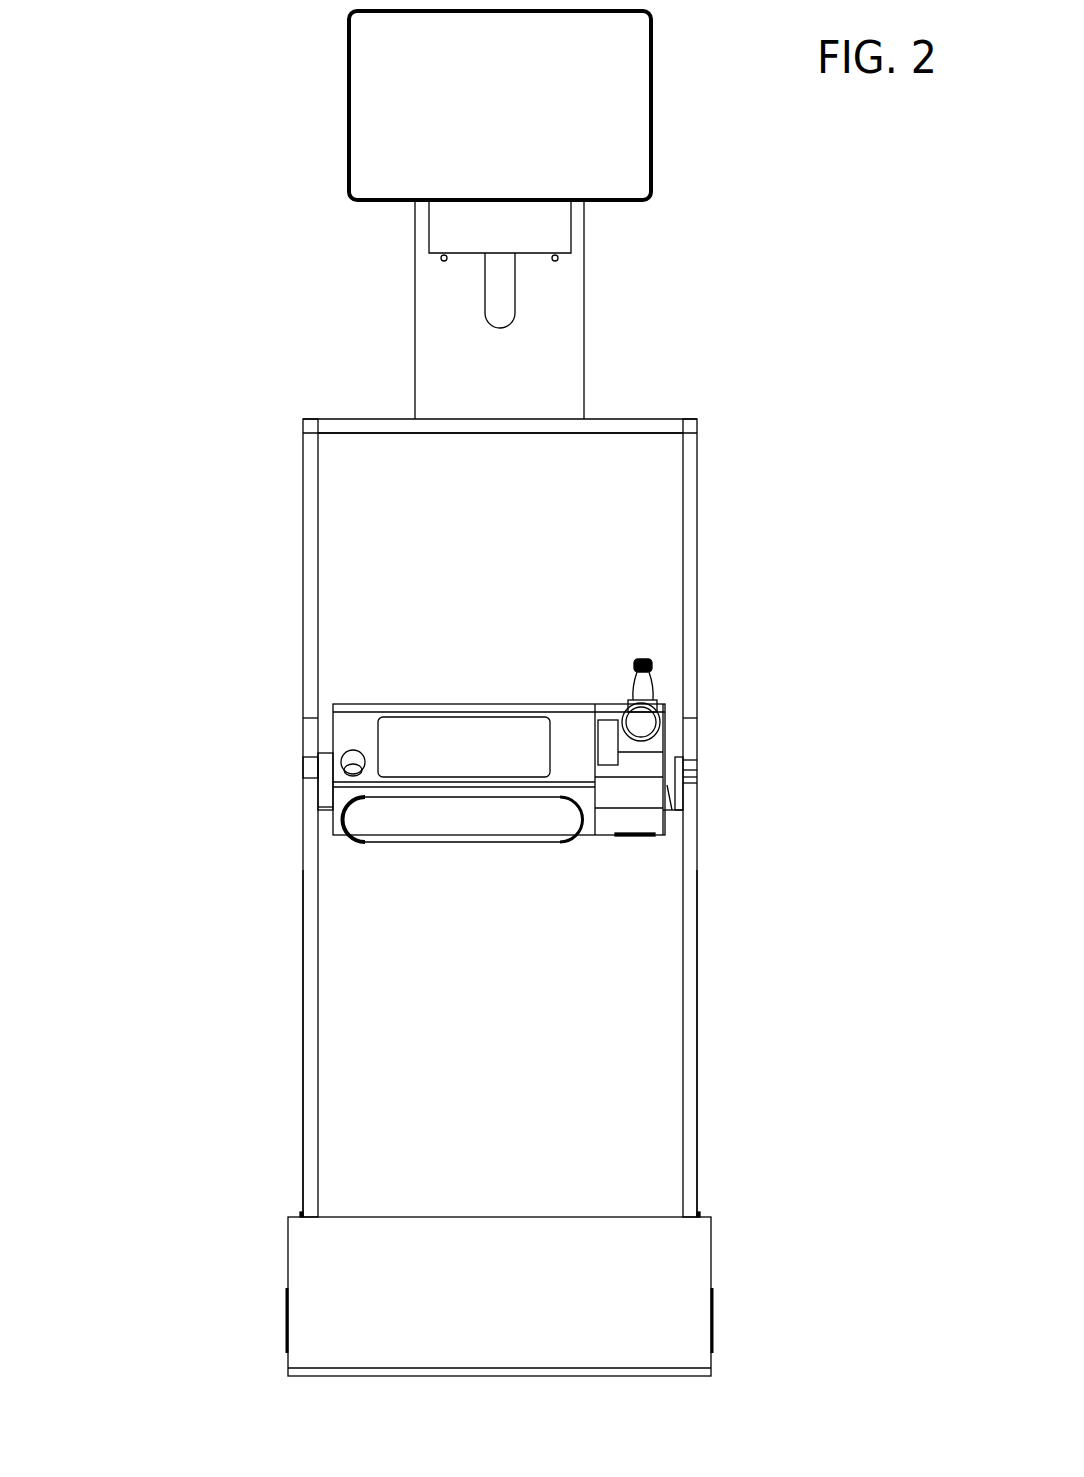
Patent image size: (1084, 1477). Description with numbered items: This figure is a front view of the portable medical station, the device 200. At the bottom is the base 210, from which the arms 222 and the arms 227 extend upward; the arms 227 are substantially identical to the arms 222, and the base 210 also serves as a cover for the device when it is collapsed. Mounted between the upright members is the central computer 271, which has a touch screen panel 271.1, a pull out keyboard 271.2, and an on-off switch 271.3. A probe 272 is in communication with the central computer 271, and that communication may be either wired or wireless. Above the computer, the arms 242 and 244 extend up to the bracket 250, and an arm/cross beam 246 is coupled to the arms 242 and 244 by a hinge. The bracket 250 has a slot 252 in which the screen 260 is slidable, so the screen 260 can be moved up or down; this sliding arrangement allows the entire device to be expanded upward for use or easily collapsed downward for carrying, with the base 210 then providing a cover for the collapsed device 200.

The device 200 is at (180, 130).
The base 210 is at (681, 1285).
The arms 222 is at (303, 945).
The arms 227 is at (697, 943).
The arm 242 is at (313, 588).
The arm 244 is at (683, 545).
The arm/cross beam 246 is at (389, 433).
The bracket 250 is at (437, 330).
The slot 252 is at (515, 295).
The screen 260 is at (365, 176).
The central computer 271 is at (465, 868).
The touch screen panel 271.1 is at (453, 735).
The pull out keyboard 271.2 is at (413, 840).
The on-off switch 271.3 is at (350, 762).
The probe 272 is at (640, 660).